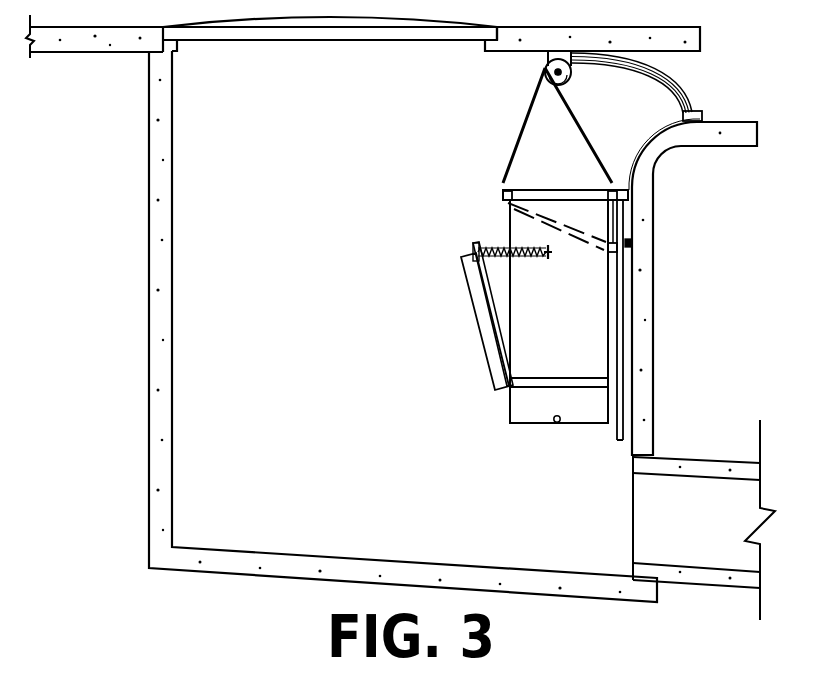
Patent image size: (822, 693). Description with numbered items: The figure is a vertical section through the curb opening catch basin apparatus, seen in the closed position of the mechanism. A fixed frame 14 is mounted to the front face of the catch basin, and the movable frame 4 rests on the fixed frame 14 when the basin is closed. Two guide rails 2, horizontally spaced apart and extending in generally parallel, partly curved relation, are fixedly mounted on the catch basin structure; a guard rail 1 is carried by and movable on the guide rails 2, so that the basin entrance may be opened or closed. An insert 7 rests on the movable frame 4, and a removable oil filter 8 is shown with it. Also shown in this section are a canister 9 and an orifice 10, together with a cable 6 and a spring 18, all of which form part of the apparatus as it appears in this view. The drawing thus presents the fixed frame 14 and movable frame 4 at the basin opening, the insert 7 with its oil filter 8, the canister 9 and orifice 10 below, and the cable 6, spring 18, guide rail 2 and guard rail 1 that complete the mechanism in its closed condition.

The guard rail 1 is at (698, 104).
The guide rail 2 is at (688, 82).
The movable frame 4 is at (530, 190).
The cable 6 is at (526, 122).
The insert 7 is at (517, 307).
The removable oil filter 8 is at (472, 280).
The canister 9 is at (518, 408).
The orifice 10 is at (556, 424).
The fixed frame 14 is at (628, 431).
The spring 18 is at (493, 243).